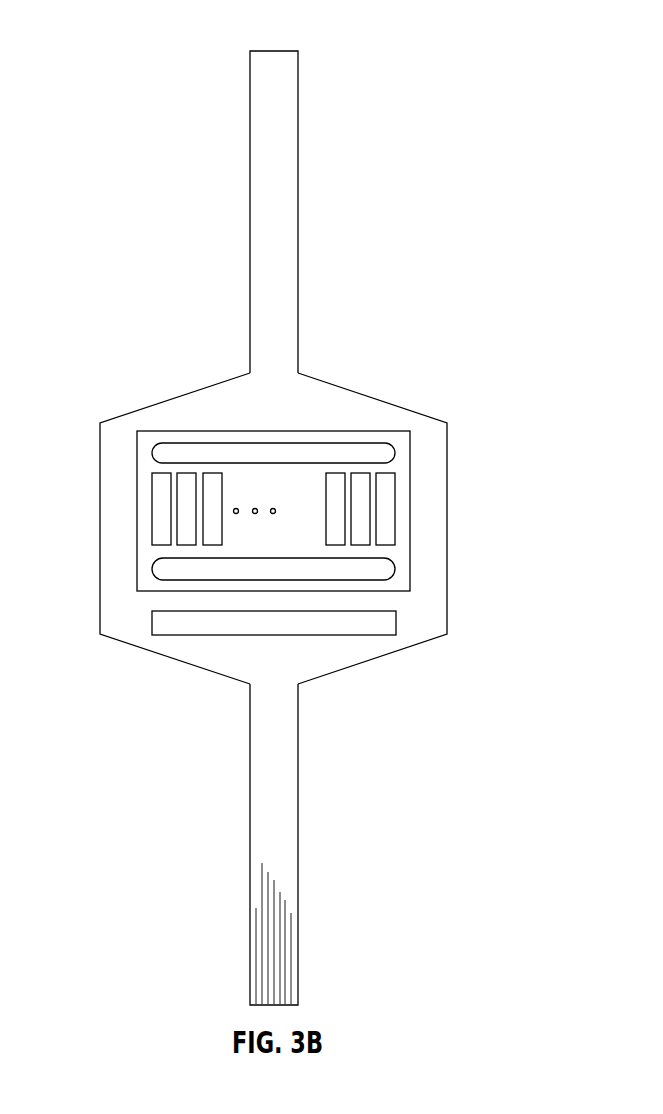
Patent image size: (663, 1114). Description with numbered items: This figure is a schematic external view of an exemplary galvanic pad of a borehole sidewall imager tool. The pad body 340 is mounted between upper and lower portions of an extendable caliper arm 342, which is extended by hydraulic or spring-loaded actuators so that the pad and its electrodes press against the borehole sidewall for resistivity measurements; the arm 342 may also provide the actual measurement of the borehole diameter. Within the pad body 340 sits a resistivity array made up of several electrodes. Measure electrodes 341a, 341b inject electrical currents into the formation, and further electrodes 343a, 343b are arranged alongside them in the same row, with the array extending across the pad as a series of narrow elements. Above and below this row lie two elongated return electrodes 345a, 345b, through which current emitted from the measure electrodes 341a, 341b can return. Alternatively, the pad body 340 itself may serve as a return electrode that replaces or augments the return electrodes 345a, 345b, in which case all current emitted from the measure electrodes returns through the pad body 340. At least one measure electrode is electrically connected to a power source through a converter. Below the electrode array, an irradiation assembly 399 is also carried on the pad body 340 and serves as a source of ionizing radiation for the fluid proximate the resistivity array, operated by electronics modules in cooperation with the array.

The pad body 340 is at (312, 378).
The extendable caliper arm 342 is at (298, 157).
The measure electrode 341a is at (182, 472).
The measure electrode 341b is at (365, 472).
The electrode 343a is at (150, 488).
The electrode 343b is at (397, 487).
The return electrode 345a is at (294, 431).
The return electrode 345b is at (397, 569).
The irradiation assembly 399 is at (397, 627).